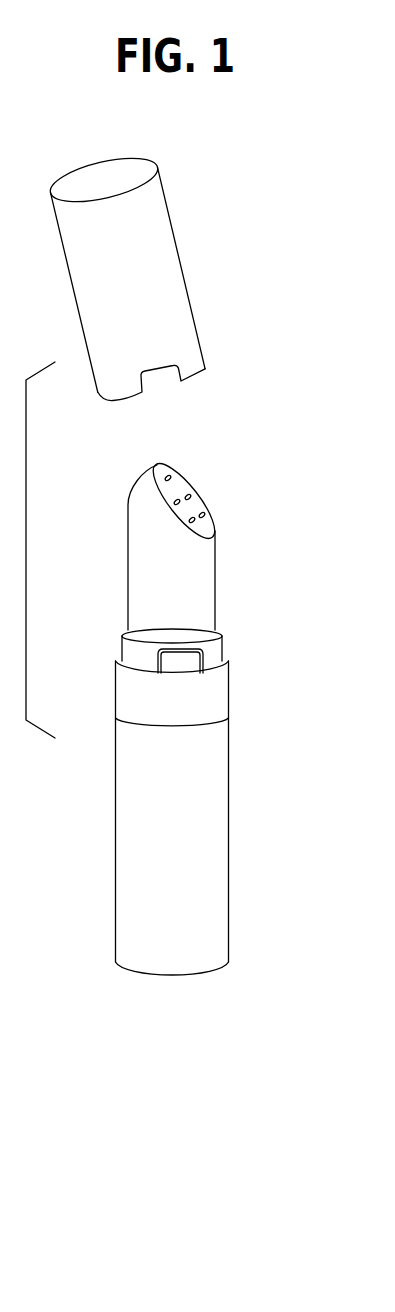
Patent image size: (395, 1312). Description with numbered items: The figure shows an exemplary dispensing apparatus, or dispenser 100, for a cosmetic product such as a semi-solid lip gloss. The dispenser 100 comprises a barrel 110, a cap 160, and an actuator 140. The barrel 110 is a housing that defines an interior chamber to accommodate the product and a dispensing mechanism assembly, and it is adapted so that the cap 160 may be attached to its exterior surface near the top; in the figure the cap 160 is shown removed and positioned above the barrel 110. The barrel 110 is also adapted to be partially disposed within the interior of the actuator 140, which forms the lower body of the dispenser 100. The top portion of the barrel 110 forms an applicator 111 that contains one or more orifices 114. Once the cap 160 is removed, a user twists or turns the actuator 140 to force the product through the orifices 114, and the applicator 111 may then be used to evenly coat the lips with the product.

The dispenser 100 is at (297, 380).
The barrel 110 is at (200, 584).
The applicator 111 is at (210, 528).
The orifices 114 is at (172, 476).
The actuator 140 is at (210, 824).
The cap 160 is at (158, 211).